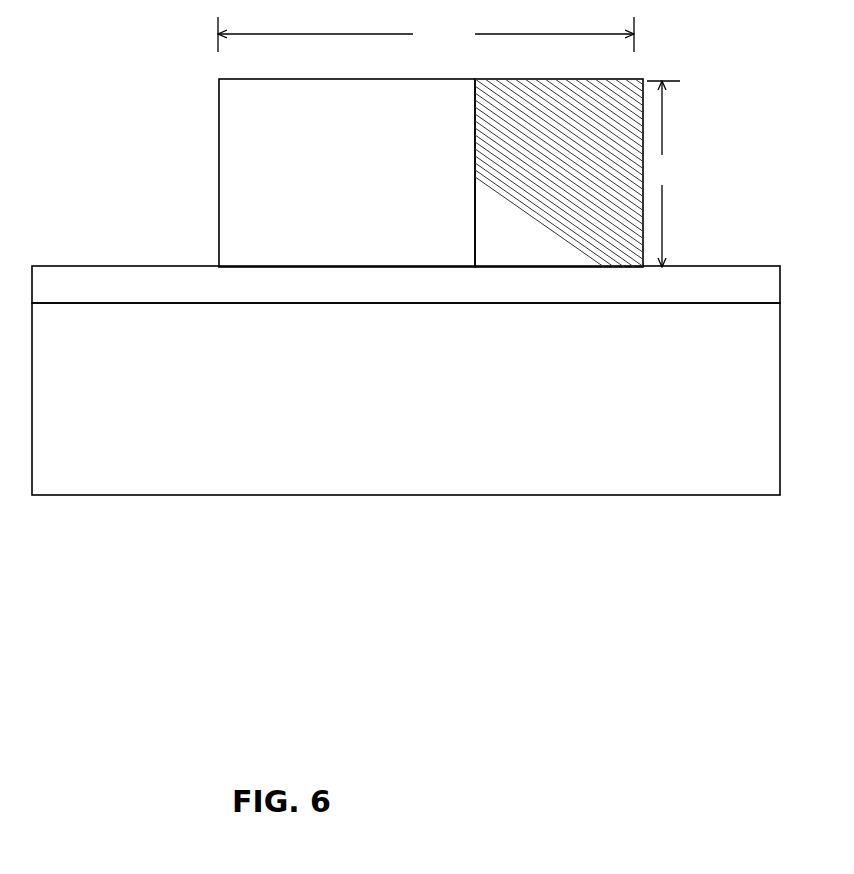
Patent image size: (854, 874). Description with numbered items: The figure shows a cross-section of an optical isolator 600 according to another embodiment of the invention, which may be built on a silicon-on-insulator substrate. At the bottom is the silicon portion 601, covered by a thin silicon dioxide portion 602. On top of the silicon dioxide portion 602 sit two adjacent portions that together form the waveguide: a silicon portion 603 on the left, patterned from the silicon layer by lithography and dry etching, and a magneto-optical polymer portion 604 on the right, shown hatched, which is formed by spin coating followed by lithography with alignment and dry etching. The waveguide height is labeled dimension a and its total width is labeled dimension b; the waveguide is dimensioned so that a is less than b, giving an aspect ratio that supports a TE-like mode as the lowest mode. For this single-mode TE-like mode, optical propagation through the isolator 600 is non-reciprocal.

The optical isolator 600 is at (443, 311).
The silicon portion 601 is at (406, 399).
The silicon dioxide portion 602 is at (406, 284).
The silicon portion 603 is at (347, 173).
The magneto-optical polymer portion 604 is at (594, 173).